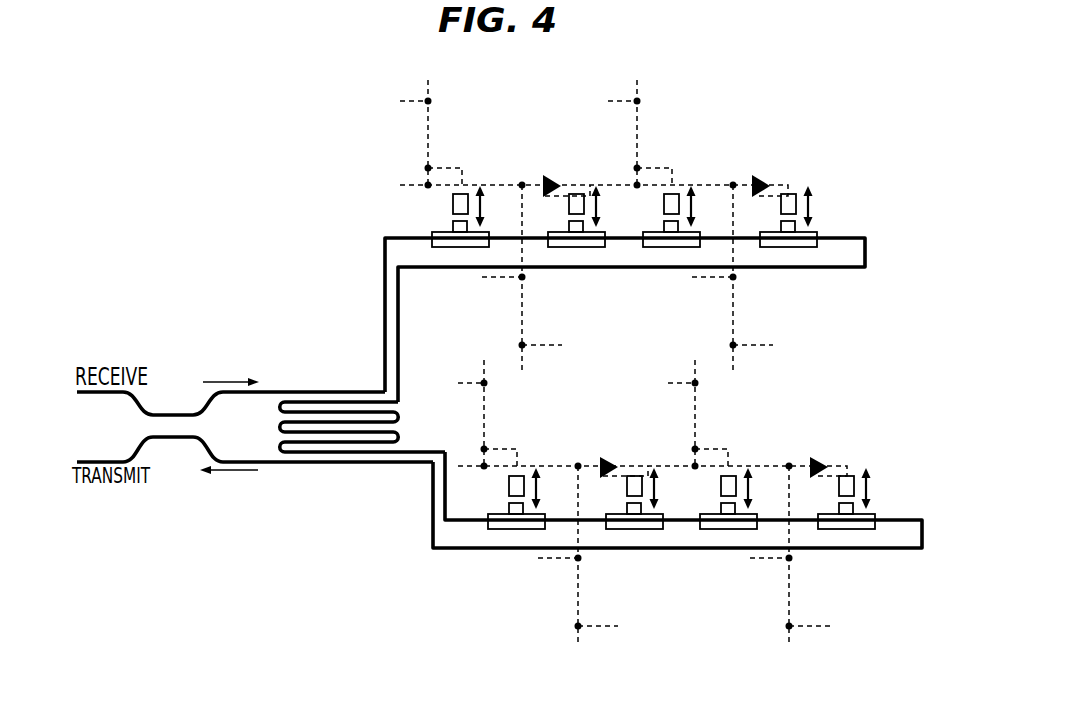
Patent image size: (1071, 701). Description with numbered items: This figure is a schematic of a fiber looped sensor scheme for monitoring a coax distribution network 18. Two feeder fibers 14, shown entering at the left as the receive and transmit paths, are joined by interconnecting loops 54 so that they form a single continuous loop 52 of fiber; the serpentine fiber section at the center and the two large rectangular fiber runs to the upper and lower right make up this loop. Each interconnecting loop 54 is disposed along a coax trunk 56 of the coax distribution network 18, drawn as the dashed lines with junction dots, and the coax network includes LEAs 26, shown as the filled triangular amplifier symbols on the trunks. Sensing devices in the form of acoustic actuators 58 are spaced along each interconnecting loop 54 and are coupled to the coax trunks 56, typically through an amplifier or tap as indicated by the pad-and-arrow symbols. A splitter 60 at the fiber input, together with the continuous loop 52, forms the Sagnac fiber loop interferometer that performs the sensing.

The feeder fiber 14 is at (250, 462).
The coax distribution network 18 is at (724, 162).
The LEA 26 is at (558, 178).
The continuous loop 52 is at (368, 478).
The interconnecting loop 54 is at (436, 268).
The coax trunk 56 is at (532, 168).
The acoustic actuator 58 is at (434, 234).
The splitter 60 is at (170, 358).